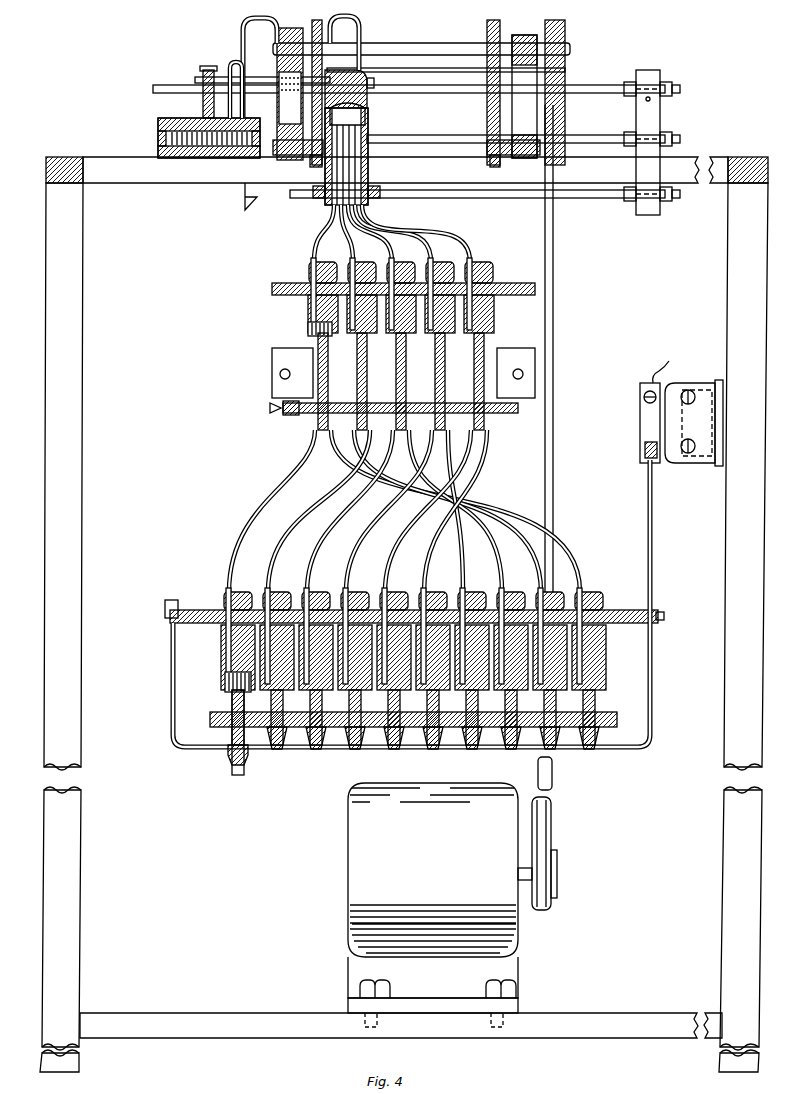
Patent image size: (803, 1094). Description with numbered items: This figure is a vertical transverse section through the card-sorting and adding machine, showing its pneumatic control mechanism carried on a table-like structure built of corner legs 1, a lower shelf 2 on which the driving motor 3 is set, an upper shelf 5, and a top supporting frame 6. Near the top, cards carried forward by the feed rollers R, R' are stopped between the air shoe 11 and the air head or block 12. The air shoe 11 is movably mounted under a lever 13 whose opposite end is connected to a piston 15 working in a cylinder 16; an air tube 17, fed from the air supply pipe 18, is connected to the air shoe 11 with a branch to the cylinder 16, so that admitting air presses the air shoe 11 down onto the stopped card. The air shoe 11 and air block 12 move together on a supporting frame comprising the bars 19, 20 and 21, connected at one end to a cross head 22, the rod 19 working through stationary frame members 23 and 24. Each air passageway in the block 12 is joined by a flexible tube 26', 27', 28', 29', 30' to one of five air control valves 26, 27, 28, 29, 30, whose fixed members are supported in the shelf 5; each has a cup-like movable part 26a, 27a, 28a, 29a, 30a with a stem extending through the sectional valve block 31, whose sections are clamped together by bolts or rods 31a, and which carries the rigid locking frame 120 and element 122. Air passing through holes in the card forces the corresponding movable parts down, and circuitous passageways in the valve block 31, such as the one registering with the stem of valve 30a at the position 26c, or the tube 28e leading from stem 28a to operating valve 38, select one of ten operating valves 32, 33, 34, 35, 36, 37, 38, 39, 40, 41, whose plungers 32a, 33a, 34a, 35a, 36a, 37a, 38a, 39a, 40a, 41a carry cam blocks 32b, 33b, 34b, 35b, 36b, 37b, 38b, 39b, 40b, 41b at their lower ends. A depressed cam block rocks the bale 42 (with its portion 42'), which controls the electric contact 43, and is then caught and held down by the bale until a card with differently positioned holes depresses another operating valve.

The corner leg 1 is at (74, 910).
The lower shelf 2 is at (228, 1020).
The driving motor 3 is at (452, 892).
The upper shelf 5 is at (272, 289).
The top supporting frame 6 is at (168, 180).
The air shoe 11 is at (367, 96).
The air head or block 12 is at (313, 191).
The lever 13 is at (428, 92).
The piston 15 is at (203, 110).
The cylinder 16 is at (158, 136).
The air tube 17 is at (236, 60).
The air supply pipe 18 is at (256, 198).
The bar 19 is at (458, 88).
The bar 20 is at (460, 139).
The bar 21 is at (498, 193).
The cross head 22 is at (660, 117).
The stationary frame member 23 is at (299, 92).
The stationary frame member 24 is at (524, 96).
The feed roller R is at (511, 89).
The feed roller R' is at (406, 159).
The air control valve 26 is at (311, 291).
The air control valve 27 is at (356, 291).
The air control valve 28 is at (396, 291).
The air control valve 29 is at (435, 291).
The air control valve 30 is at (474, 292).
The flexible tube 26' is at (416, 230).
The flexible tube 27' is at (393, 230).
The flexible tube 28' is at (341, 233).
The flexible tube 29' is at (322, 233).
The flexible tube 30' is at (315, 233).
The movable valve part 26a is at (308, 330).
The movable valve part 27a is at (357, 343).
The movable valve part 28a is at (396, 343).
The movable valve part 29a is at (435, 343).
The movable valve part 30a is at (474, 343).
The passageway 26c is at (300, 494).
The air tube 28e is at (412, 442).
The valve block 31 is at (280, 374).
The bolt or rod 31a is at (518, 368).
The locking frame 120 is at (289, 416).
The bolt 122 is at (268, 409).
The operating valve 32 is at (236, 592).
The operating valve 33 is at (276, 592).
The operating valve 34 is at (314, 592).
The operating valve 35 is at (354, 592).
The operating valve 36 is at (392, 592).
The operating valve 37 is at (432, 592).
The operating valve 38 is at (470, 592).
The operating valve 39 is at (510, 592).
The operating valve 40 is at (546, 594).
The operating valve 41 is at (586, 596).
The coupling 32a is at (225, 690).
The valve stem 33a is at (272, 700).
The valve stem 34a is at (311, 700).
The valve stem 35a is at (350, 700).
The valve stem 36a is at (389, 700).
The valve stem 37a is at (428, 700).
The valve stem 38a is at (467, 700).
The valve stem 39a is at (506, 700).
The valve stem 40a is at (545, 700).
The valve stem 41a is at (584, 700).
The cam block 32b is at (246, 770).
The cam block 33b is at (284, 746).
The cam block 34b is at (322, 746).
The cam block 35b is at (362, 746).
The cam block 36b is at (402, 746).
The cam block 37b is at (441, 746).
The cam block 38b is at (479, 746).
The cam block 39b is at (516, 748).
The cam block 40b is at (558, 748).
The cam block 41b is at (598, 748).
The bale 42 is at (426, 603).
The pipe 42' is at (202, 737).
The electric contact 43 is at (644, 456).